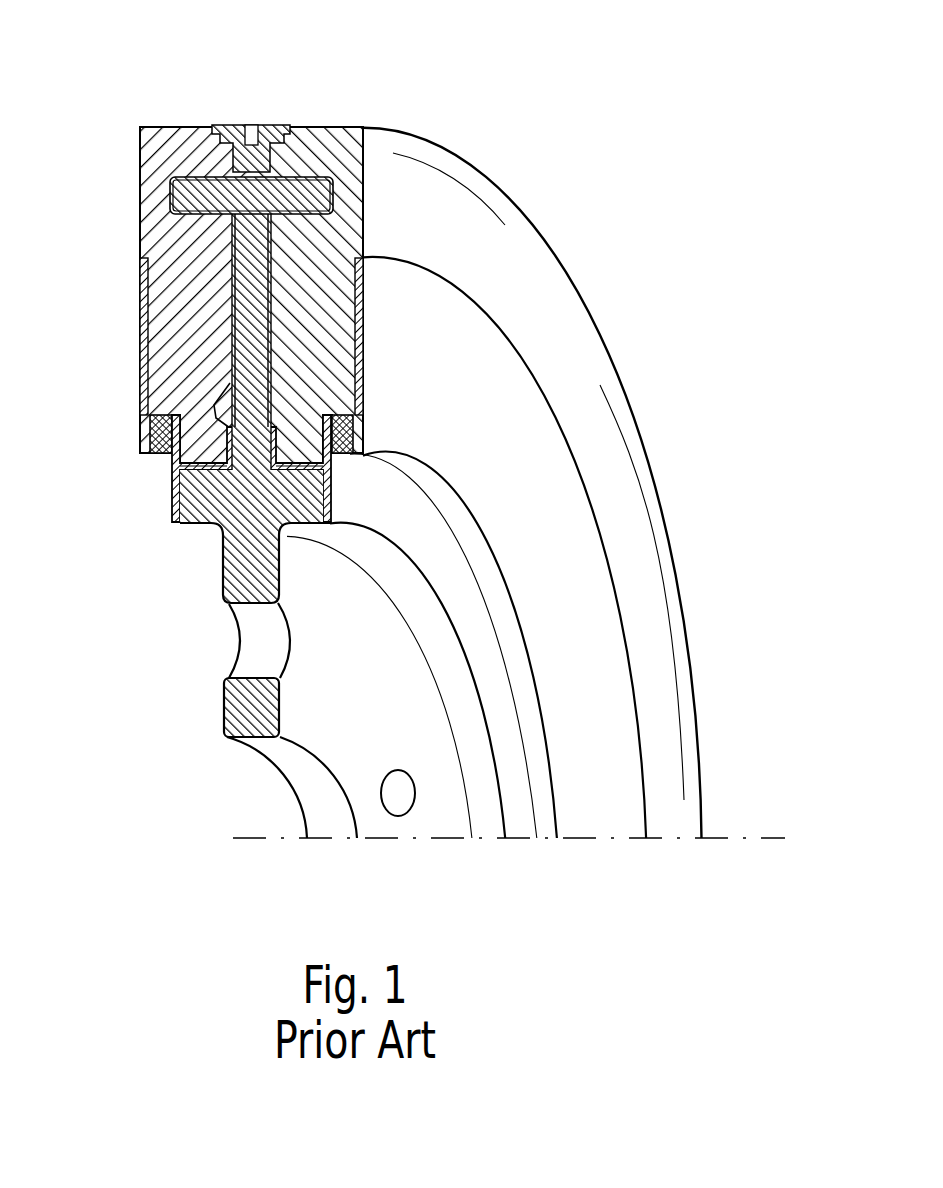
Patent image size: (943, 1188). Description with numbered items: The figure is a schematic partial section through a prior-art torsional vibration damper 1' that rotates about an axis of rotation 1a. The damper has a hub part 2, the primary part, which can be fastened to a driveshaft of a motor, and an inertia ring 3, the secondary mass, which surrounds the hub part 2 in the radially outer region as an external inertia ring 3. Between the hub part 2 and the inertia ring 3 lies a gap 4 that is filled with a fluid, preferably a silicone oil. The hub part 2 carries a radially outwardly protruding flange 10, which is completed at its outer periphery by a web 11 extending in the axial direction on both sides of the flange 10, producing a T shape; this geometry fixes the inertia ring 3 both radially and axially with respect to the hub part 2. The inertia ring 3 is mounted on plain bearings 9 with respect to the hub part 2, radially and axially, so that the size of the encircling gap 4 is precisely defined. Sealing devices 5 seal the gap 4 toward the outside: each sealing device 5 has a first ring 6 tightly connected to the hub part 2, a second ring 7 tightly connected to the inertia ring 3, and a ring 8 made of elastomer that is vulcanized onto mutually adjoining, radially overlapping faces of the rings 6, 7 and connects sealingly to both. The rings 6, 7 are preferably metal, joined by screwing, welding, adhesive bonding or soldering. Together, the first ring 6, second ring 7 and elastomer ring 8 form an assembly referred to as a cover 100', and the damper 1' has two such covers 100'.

The torsional vibration damper 1' is at (565, 483).
The axis of rotation 1a is at (725, 838).
The hub part 2 is at (206, 590).
The inertia ring 3 is at (331, 118).
The gap 4 is at (233, 248).
The sealing device 5 is at (122, 480).
The first ring 6 is at (203, 470).
The second ring 7 is at (140, 313).
The ring made of elastomer 8 is at (150, 435).
The plain bearings 9 is at (205, 487).
The flange 10 is at (253, 303).
The web 11 is at (205, 192).
The cover 100' is at (754, 618).